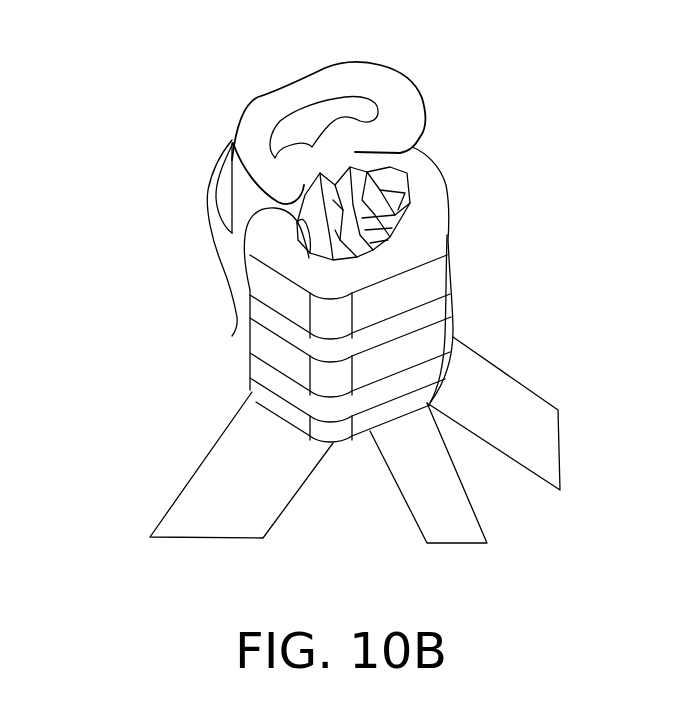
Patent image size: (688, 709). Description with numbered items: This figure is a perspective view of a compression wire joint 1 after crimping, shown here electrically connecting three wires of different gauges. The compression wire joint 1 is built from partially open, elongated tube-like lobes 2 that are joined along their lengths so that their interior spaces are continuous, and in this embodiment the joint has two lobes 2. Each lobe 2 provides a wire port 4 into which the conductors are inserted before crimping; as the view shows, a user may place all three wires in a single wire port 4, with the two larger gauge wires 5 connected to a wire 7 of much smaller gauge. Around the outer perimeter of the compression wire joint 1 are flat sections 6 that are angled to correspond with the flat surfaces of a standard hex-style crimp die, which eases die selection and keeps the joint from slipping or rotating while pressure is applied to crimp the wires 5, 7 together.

The compression wire joint 1 is at (128, 268).
The lobe 2 is at (460, 130).
The wire port 4 is at (305, 133).
The wire 5 is at (305, 193).
The flat section 6 is at (400, 293).
The wire 7 is at (405, 228).